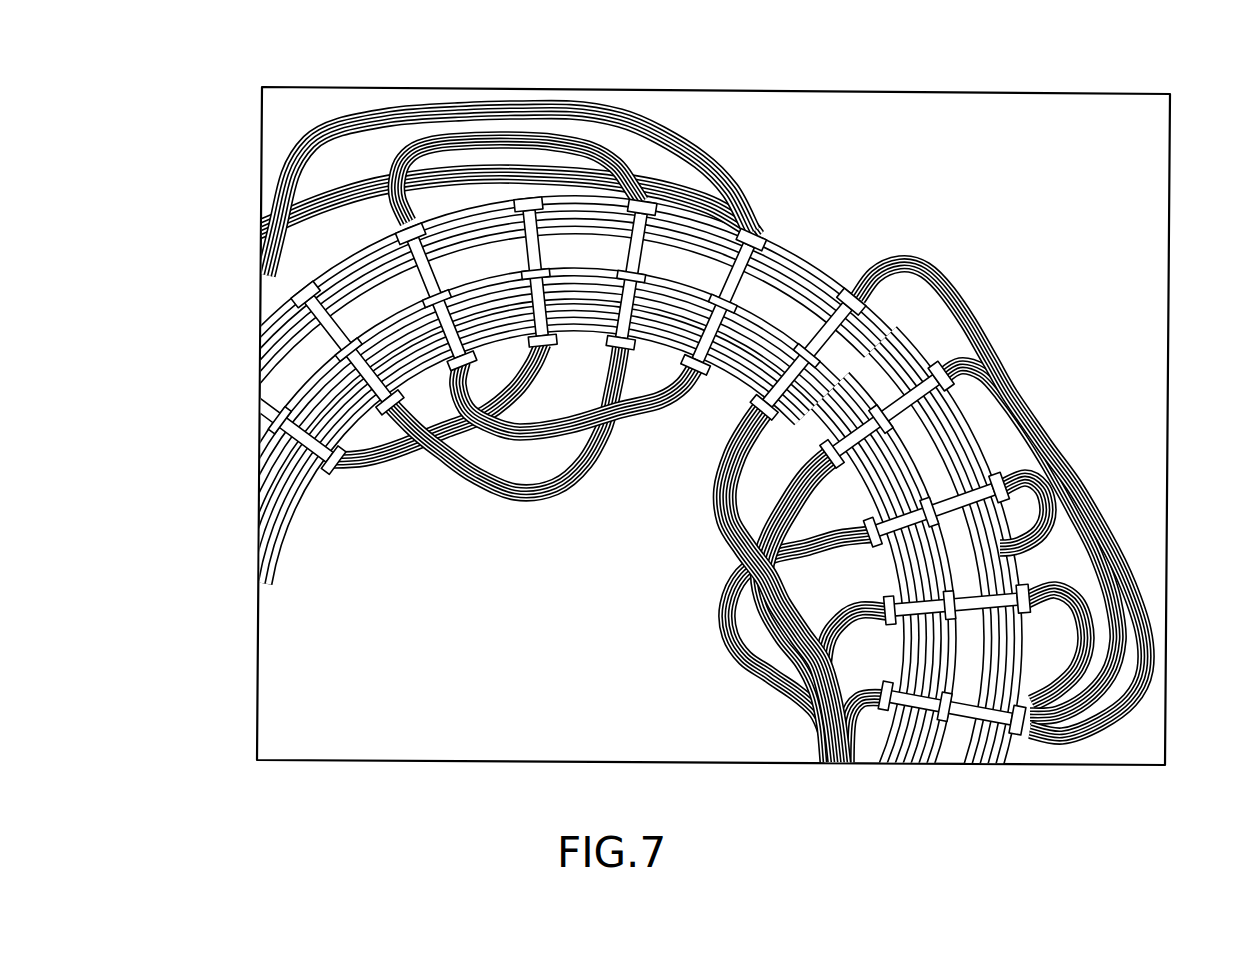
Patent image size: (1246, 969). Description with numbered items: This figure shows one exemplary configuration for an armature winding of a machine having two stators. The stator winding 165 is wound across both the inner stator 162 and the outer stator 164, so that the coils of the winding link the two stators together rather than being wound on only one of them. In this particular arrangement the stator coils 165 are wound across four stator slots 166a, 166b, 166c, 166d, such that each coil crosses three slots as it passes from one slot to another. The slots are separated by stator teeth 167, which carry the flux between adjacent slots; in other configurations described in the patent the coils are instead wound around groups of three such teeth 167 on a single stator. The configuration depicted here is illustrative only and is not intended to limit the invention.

The inner stator 162 is at (380, 334).
The outer stator 164 is at (1012, 523).
The stator winding 165 is at (416, 110).
The stator slot 166a is at (775, 228).
The stator slot 166b is at (860, 284).
The stator slot 166c is at (923, 373).
The stator slot 166d is at (985, 476).
The stator teeth 167 is at (374, 283).